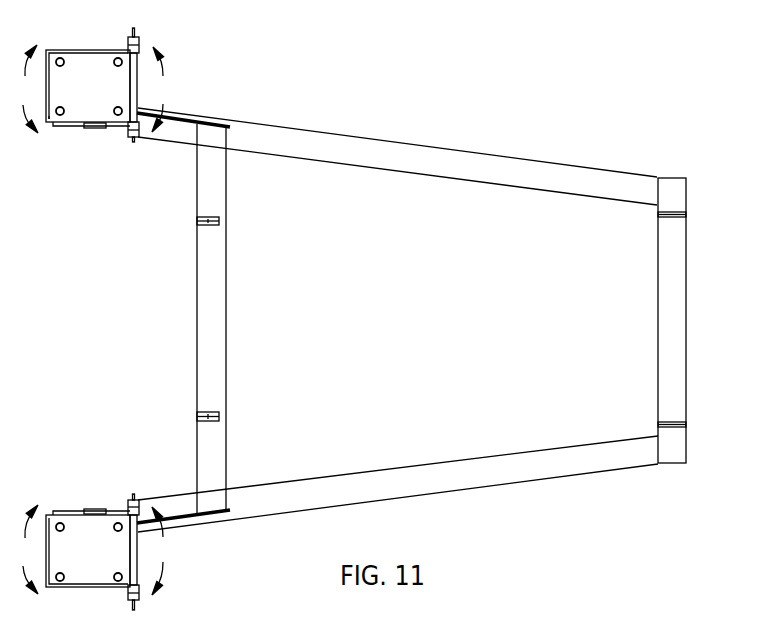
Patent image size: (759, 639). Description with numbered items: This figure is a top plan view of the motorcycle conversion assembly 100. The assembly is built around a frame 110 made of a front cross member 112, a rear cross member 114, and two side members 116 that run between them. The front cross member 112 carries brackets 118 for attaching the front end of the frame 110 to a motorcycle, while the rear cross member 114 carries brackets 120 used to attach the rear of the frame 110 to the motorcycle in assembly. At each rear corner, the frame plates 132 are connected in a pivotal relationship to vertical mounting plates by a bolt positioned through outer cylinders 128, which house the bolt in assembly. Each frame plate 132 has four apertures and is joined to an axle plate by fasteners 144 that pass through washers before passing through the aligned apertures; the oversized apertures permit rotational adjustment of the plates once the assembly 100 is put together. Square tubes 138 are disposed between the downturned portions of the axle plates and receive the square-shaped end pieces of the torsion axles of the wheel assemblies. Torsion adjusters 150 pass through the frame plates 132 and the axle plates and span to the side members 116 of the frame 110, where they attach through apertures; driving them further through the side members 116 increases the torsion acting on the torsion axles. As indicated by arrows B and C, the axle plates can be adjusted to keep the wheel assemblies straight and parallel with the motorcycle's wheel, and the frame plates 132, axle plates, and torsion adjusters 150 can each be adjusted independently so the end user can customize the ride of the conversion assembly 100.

The motorcycle conversion assembly 100 is at (375, 319).
The frame 110 is at (436, 321).
The front cross member 112 is at (681, 326).
The rear cross member 114 is at (217, 313).
The side members 116 is at (423, 157).
The brackets 118 is at (673, 212).
The brackets 120 is at (214, 217).
The outer cylinders 128 is at (178, 116).
The frame plates 132 is at (101, 94).
The square tubes 138 is at (100, 129).
The fasteners 144 is at (114, 58).
The torsion adjusters 150 is at (66, 122).